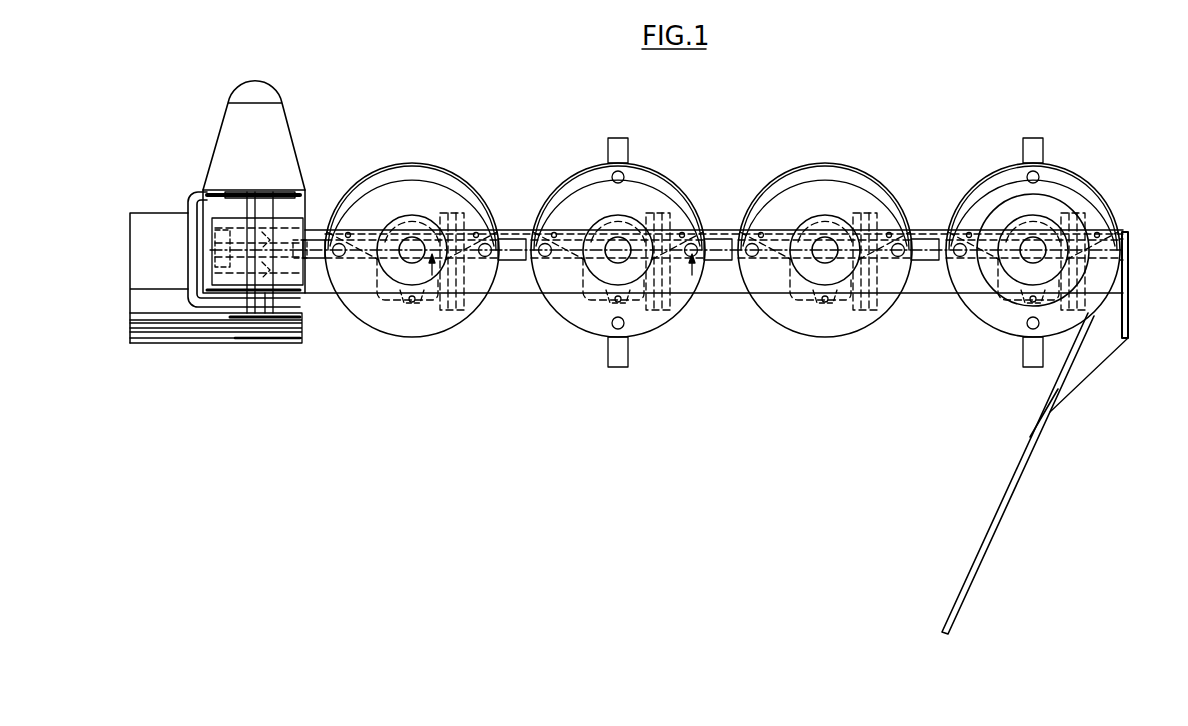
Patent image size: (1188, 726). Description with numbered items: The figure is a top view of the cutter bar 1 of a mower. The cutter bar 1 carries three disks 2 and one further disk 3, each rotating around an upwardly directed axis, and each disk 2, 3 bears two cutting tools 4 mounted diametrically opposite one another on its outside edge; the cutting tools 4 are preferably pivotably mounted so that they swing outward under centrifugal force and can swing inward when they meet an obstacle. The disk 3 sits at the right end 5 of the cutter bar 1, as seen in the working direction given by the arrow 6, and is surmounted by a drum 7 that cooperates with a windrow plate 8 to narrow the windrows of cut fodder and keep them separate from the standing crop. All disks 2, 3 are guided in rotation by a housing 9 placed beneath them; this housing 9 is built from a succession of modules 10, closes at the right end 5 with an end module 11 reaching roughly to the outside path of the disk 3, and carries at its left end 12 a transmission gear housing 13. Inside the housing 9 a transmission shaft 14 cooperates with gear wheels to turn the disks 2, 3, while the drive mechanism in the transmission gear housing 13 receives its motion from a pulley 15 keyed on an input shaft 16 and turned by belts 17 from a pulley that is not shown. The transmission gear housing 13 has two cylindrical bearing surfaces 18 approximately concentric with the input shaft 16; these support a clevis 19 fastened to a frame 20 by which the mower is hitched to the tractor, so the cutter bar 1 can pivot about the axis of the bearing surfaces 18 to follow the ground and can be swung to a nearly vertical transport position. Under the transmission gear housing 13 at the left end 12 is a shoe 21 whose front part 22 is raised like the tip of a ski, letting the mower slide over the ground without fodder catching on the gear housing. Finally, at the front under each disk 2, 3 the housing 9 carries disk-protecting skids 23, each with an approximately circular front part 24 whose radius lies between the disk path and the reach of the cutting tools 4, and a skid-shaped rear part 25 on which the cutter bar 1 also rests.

The cutter bar 1 is at (758, 112).
The disk 2 is at (440, 320).
The disk 3 is at (1012, 322).
The cutting tool 4 is at (316, 238).
The right end 5 is at (1150, 212).
The arrow 6 is at (494, 36).
The drum 7 is at (1053, 213).
The windrow plate 8 is at (1003, 497).
The housing 9 is at (502, 300).
The module 10 is at (352, 293).
The end module 11 is at (1124, 288).
The left end 12 is at (185, 170).
The transmission gear housing 13 is at (294, 268).
The transmission shaft 14 is at (712, 295).
The pulley 15 is at (238, 342).
The input shaft 16 is at (265, 312).
The belts 17 is at (181, 318).
The cylindrical bearing surfaces 18 is at (280, 196).
The clevis 19 is at (196, 208).
The frame 20 is at (146, 222).
The shoe 21 is at (299, 130).
The front part 22 is at (222, 140).
The disk-protecting skid 23 is at (408, 160).
The front part 24 is at (468, 170).
The rear part 25 is at (393, 308).